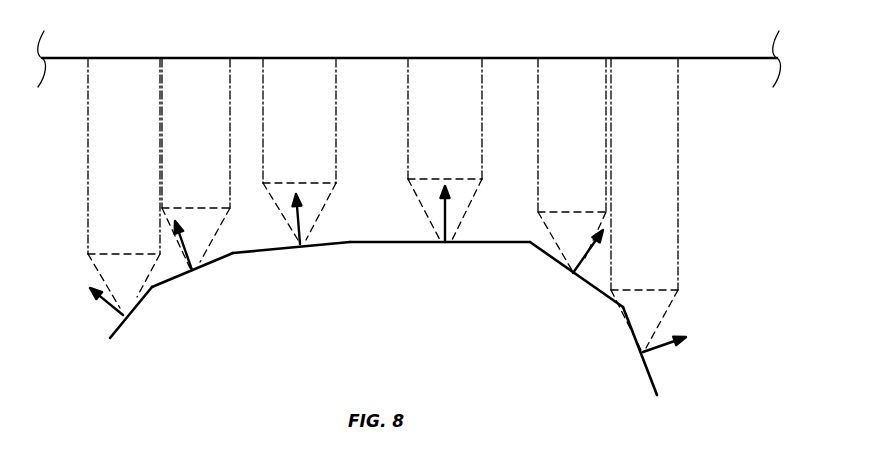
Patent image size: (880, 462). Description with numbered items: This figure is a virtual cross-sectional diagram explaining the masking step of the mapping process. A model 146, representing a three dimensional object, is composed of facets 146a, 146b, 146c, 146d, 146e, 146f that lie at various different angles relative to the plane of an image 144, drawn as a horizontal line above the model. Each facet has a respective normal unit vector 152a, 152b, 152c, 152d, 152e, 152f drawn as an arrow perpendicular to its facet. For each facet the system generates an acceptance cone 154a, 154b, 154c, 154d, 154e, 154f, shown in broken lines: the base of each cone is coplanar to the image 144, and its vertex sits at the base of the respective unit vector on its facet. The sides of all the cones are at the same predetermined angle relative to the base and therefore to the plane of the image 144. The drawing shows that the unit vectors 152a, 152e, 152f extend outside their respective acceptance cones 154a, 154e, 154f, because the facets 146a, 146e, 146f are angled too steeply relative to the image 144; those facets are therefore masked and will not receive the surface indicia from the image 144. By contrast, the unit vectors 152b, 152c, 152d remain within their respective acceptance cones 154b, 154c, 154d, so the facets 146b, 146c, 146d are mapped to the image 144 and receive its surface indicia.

The image 144 is at (130, 57).
The model 146 is at (430, 324).
The facet 146a is at (125, 323).
The facet 146b is at (187, 277).
The facet 146c is at (318, 246).
The facet 146d is at (459, 243).
The facet 146e is at (572, 268).
The facet 146f is at (633, 357).
The normal unit vector 152a is at (107, 310).
The normal unit vector 152b is at (188, 250).
The normal unit vector 152c is at (303, 218).
The normal unit vector 152d is at (448, 208).
The normal unit vector 152e is at (591, 257).
The normal unit vector 152f is at (663, 340).
The acceptance cone 154a is at (128, 254).
The acceptance cone 154b is at (195, 208).
The acceptance cone 154c is at (301, 183).
The acceptance cone 154d is at (448, 179).
The acceptance cone 154e is at (573, 212).
The acceptance cone 154f is at (646, 290).